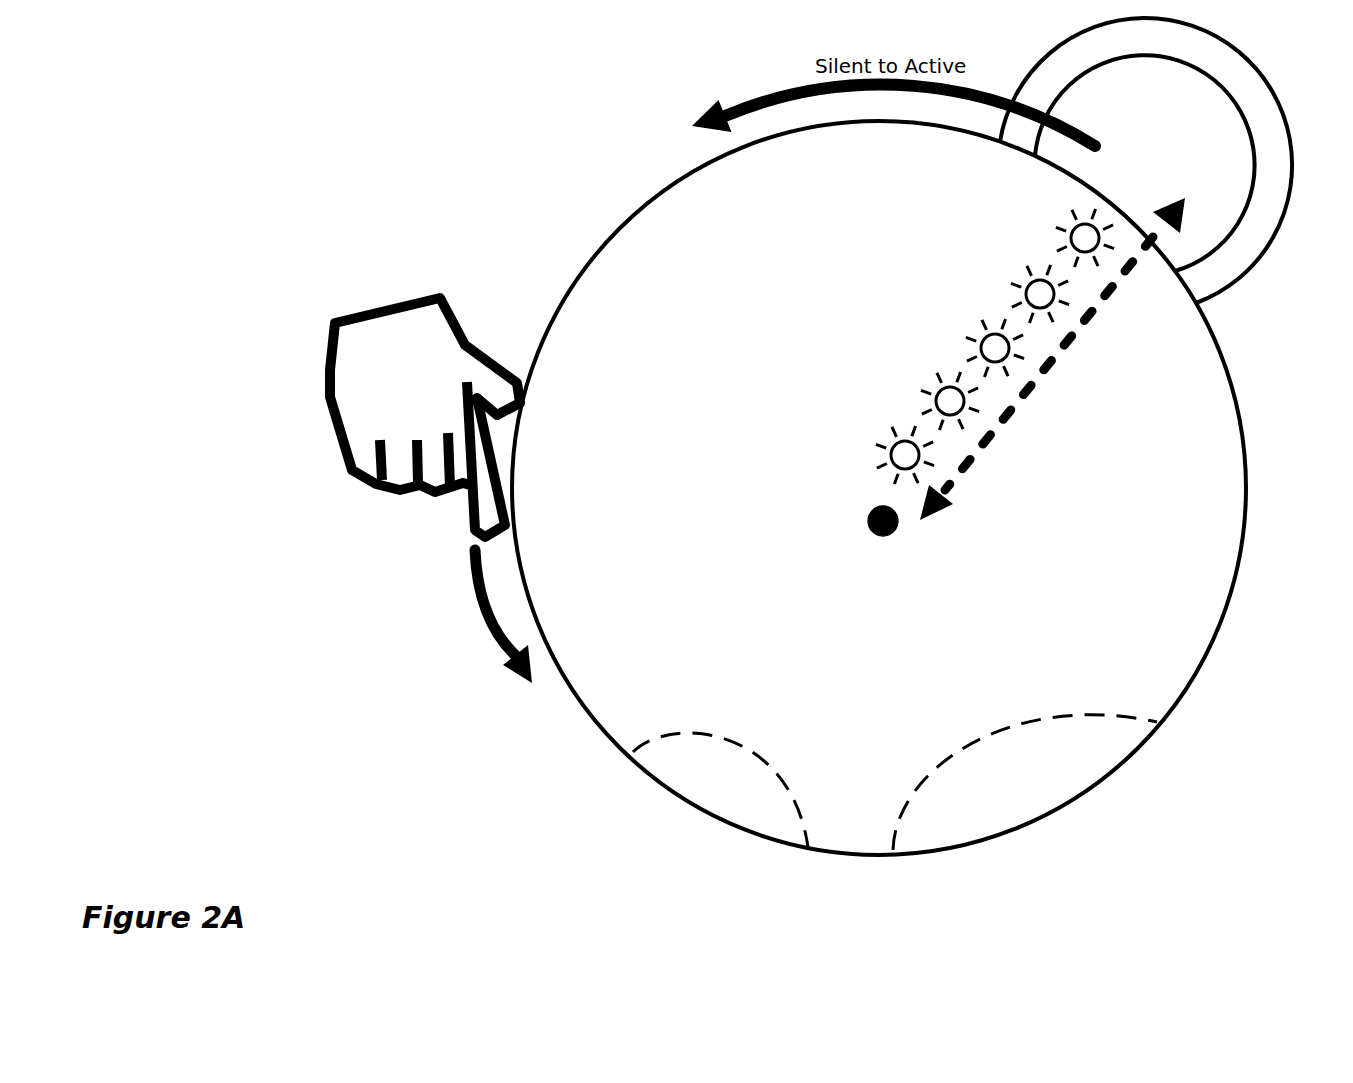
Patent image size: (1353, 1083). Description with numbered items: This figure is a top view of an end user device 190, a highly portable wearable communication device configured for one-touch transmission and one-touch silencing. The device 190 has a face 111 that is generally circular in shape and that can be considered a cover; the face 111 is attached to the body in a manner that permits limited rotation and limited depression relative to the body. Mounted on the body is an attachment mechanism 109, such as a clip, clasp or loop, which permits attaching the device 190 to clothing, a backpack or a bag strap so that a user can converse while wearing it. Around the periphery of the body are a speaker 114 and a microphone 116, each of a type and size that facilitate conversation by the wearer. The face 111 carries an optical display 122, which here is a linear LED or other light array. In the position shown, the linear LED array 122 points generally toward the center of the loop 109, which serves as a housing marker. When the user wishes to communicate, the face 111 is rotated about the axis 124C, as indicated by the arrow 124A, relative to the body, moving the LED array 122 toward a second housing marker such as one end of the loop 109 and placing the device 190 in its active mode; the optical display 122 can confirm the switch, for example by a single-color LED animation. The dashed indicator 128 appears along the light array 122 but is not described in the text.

The attachment mechanism 109 is at (1257, 262).
The face 111 is at (690, 516).
The speaker 114 is at (1128, 760).
The microphone 116 is at (658, 786).
The optical display 122 is at (983, 333).
The arrow 124A is at (757, 94).
The axis 124C is at (870, 535).
The dashed indicator path 128 is at (1022, 402).
The end user device 190 is at (418, 627).